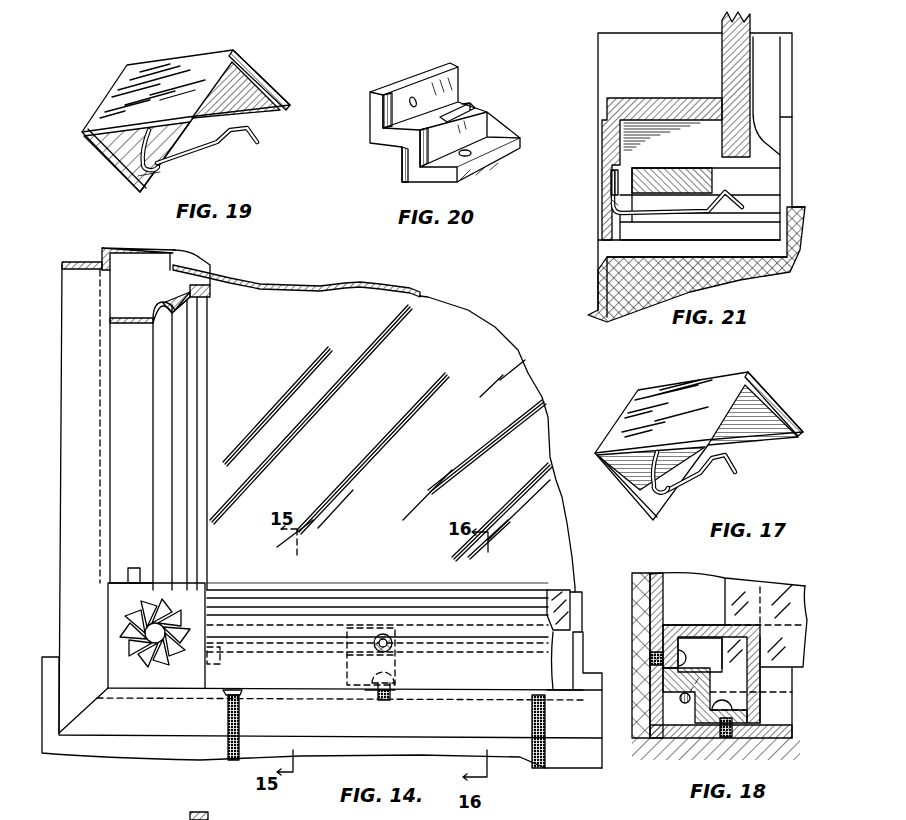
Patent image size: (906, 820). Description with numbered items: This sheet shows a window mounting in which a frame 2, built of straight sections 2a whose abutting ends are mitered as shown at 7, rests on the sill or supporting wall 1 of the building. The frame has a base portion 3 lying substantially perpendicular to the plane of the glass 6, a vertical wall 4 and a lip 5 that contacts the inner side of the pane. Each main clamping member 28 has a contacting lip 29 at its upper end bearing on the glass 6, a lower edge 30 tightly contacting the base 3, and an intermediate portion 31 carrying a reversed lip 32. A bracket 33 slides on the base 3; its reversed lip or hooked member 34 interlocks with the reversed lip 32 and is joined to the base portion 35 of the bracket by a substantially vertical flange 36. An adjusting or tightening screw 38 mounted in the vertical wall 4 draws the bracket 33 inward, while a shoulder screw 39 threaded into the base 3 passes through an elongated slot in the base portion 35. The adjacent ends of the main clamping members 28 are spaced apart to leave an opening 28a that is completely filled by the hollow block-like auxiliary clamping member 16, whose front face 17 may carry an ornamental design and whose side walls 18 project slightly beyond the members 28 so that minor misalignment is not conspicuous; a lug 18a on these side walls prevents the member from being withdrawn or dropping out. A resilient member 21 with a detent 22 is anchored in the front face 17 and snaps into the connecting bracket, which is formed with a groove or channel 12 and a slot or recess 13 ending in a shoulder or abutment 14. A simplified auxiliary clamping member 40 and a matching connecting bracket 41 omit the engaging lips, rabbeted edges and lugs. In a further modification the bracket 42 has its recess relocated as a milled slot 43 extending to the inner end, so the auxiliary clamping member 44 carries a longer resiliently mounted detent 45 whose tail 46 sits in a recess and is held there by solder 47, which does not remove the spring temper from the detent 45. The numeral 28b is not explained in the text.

In FIG. 21, the sill or supporting wall 1 is at (775, 278).
In FIG. 18, the sill or supporting wall 1 is at (629, 655).
In FIG. 14, the sill or supporting wall 1 is at (578, 760).
In FIG. 21, the frame 2 is at (598, 270).
In FIG. 18, the frame 2 is at (782, 752).
In FIG. 14, the frame 2 is at (603, 666).
In FIG. 14, the straight sections 2a is at (322, 728).
In FIG. 21, the base portion 3 is at (598, 62).
In FIG. 18, the base portion 3 is at (782, 723).
In FIG. 14, the base portion 3 is at (112, 268).
In FIG. 18, the vertical wall 4 is at (692, 580).
In FIG. 14, the vertical wall 4 is at (153, 258).
In FIG. 21, the lip 5 is at (760, 108).
In FIG. 18, the lip 5 is at (768, 587).
In FIG. 14, the lip 5 is at (210, 266).
In FIG. 21, the glass 6 is at (727, 58).
In FIG. 18, the glass 6 is at (788, 593).
In FIG. 14, the glass 6 is at (414, 297).
In FIG. 21, the mitered or beveled ends 7 is at (668, 260).
In FIG. 18, the mitered or beveled ends 7 is at (652, 733).
In FIG. 14, the mitered or beveled ends 7 is at (70, 723).
In FIG. 20, the groove or channel 12 is at (394, 163).
In FIG. 18, the slot or recess 13 is at (782, 687).
In FIG. 21, the shoulder or abutment 14 is at (700, 167).
In FIG. 14, the auxiliary clamping member 16 is at (138, 677).
In FIG. 14, the front face 17 is at (163, 660).
In FIG. 14, the side walls 18 is at (175, 585).
In FIG. 14, the lug or projection 18a is at (265, 708).
In FIG. 17, the resilient member 21 is at (695, 487).
In FIG. 18, the resilient member 21 is at (705, 687).
In FIG. 17, the detent 22 is at (732, 453).
In FIG. 18, the detent 22 is at (707, 672).
In FIG. 14, the main clamping member 28 is at (168, 376).
In FIG. 14, the opening 28a is at (207, 633).
In FIG. 14, the weather strip flange 28b is at (207, 583).
In FIG. 14, the contacting lip 29 is at (210, 318).
In FIG. 14, the lower edge 30 is at (115, 412).
In FIG. 14, the intermediate portion 31 is at (162, 414).
In FIG. 14, the reversed lip 32 is at (146, 303).
In FIG. 14, the bracket 33 is at (415, 683).
In FIG. 14, the reversed lip or hooked member 34 is at (410, 630).
In FIG. 14, the base portion 35 is at (360, 683).
In FIG. 14, the vertical flange 36 is at (423, 663).
In FIG. 14, the adjusting or tightening screw 38 is at (385, 634).
In FIG. 14, the shoulder screw 39 is at (384, 700).
In FIG. 17, the auxiliary clamping member 40 is at (648, 400).
In FIG. 18, the auxiliary clamping member 40 is at (702, 625).
In FIG. 18, the connecting bracket 41 is at (693, 733).
In FIG. 20, the bracket 42 is at (482, 165).
In FIG. 21, the bracket 42 is at (656, 168).
In FIG. 20, the slot 43 is at (480, 105).
In FIG. 21, the slot 43 is at (757, 190).
In FIG. 19, the auxiliary clamping member 44 is at (140, 72).
In FIG. 21, the auxiliary clamping member 44 is at (607, 112).
In FIG. 19, the resiliently mounted detent 45 is at (258, 130).
In FIG. 21, the resiliently mounted detent 45 is at (735, 190).
In FIG. 19, the tail 46 is at (140, 152).
In FIG. 21, the tail 46 is at (612, 200).
In FIG. 19, the solder 47 is at (163, 166).
In FIG. 21, the solder 47 is at (613, 186).